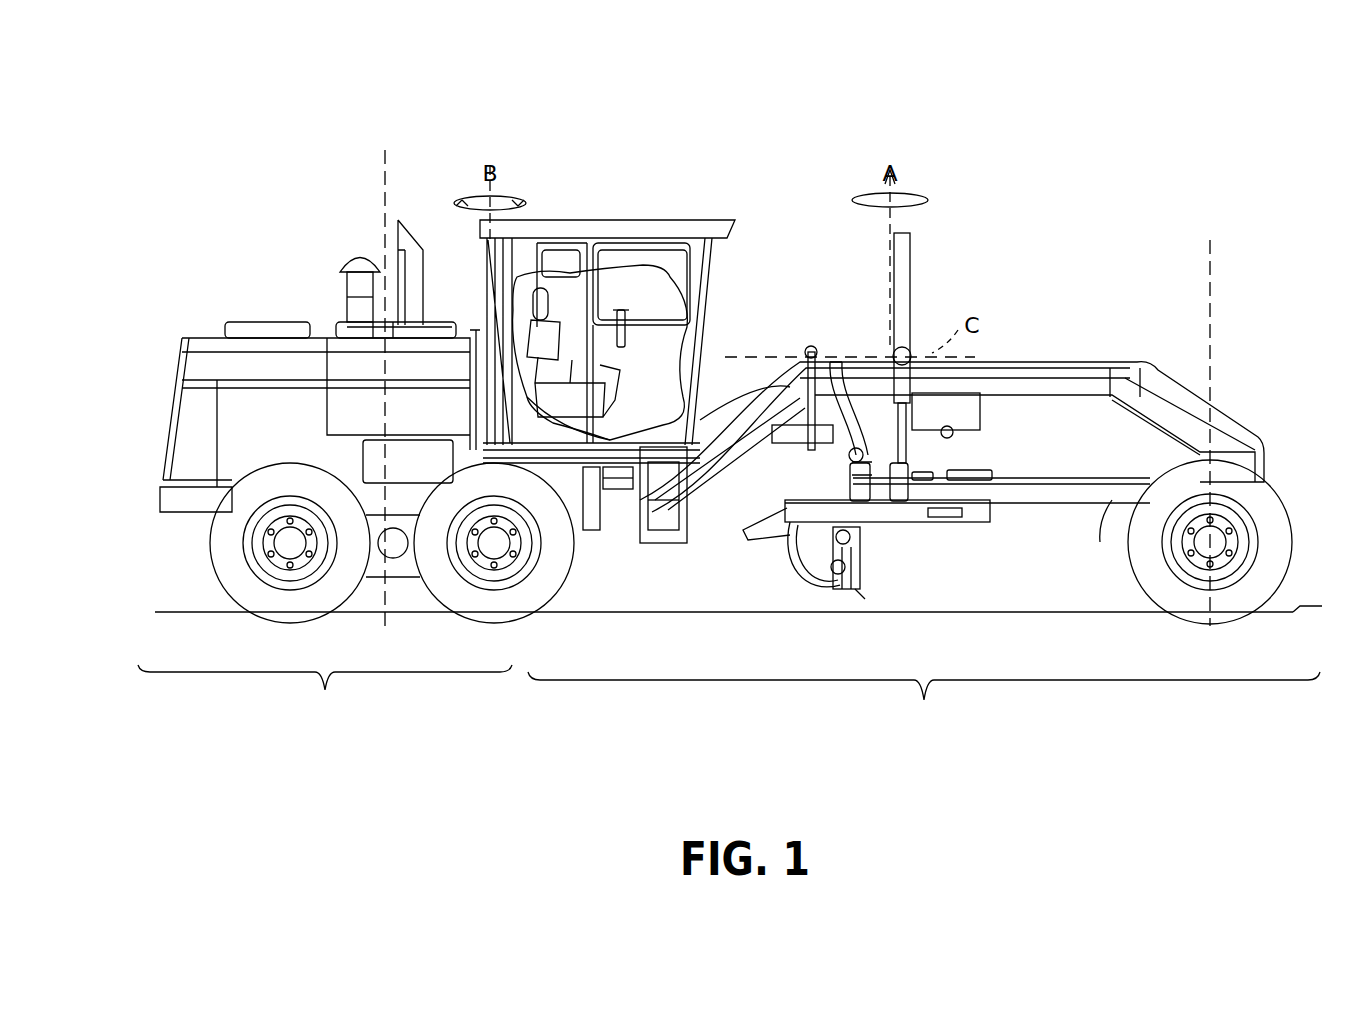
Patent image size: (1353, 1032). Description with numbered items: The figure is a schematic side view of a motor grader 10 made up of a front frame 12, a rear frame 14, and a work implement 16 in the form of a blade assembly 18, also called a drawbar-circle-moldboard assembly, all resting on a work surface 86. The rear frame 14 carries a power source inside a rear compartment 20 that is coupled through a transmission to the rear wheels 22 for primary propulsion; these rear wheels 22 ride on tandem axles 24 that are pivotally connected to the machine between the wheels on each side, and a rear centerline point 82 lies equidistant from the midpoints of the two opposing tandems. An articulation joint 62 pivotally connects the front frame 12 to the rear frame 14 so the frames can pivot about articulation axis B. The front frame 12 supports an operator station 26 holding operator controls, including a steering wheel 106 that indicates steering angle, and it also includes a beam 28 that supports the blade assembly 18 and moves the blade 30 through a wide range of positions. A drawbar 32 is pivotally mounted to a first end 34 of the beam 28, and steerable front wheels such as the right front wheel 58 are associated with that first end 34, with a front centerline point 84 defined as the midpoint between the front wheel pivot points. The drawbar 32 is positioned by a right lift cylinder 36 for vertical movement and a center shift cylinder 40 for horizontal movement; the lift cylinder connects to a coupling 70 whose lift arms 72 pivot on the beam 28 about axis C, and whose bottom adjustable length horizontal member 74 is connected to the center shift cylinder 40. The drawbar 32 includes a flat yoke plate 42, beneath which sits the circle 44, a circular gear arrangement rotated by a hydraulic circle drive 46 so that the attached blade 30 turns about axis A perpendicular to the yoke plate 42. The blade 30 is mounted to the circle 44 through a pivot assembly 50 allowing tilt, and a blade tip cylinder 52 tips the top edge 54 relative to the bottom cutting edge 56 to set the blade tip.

The motor grader 10 is at (1088, 113).
The front frame 12 is at (924, 707).
The rear frame 14 is at (325, 695).
The work implement 16 is at (938, 552).
The blade assembly 18 is at (960, 543).
The rear compartment 20 is at (232, 405).
The rear wheels 22 is at (228, 538).
The tandem axles 24 is at (378, 588).
The operator station 26 is at (706, 274).
The beam 28 is at (1083, 385).
The blade 30 is at (862, 574).
The drawbar 32 is at (1115, 503).
The first end 34 is at (1152, 468).
The right lift cylinder 36 is at (915, 290).
The center shift cylinder 40 is at (850, 455).
The yoke plate 42 is at (800, 500).
The circle 44 is at (960, 523).
The circle drive 46 is at (990, 476).
The pivot assembly 50 is at (790, 572).
The blade tip cylinder 52 is at (773, 545).
The top edge 54 is at (862, 552).
The bottom cutting edge 56 is at (863, 600).
The right front wheel 58 is at (1262, 522).
The articulation joint 62 is at (468, 300).
The coupling 70 is at (805, 347).
The lift arms 72 is at (848, 395).
The adjustable length horizontal member 74 is at (800, 437).
The rear centerline point 82 is at (383, 172).
The front centerline point 84 is at (1212, 325).
The work surface 86 is at (1297, 610).
The steering wheel 106 is at (623, 310).